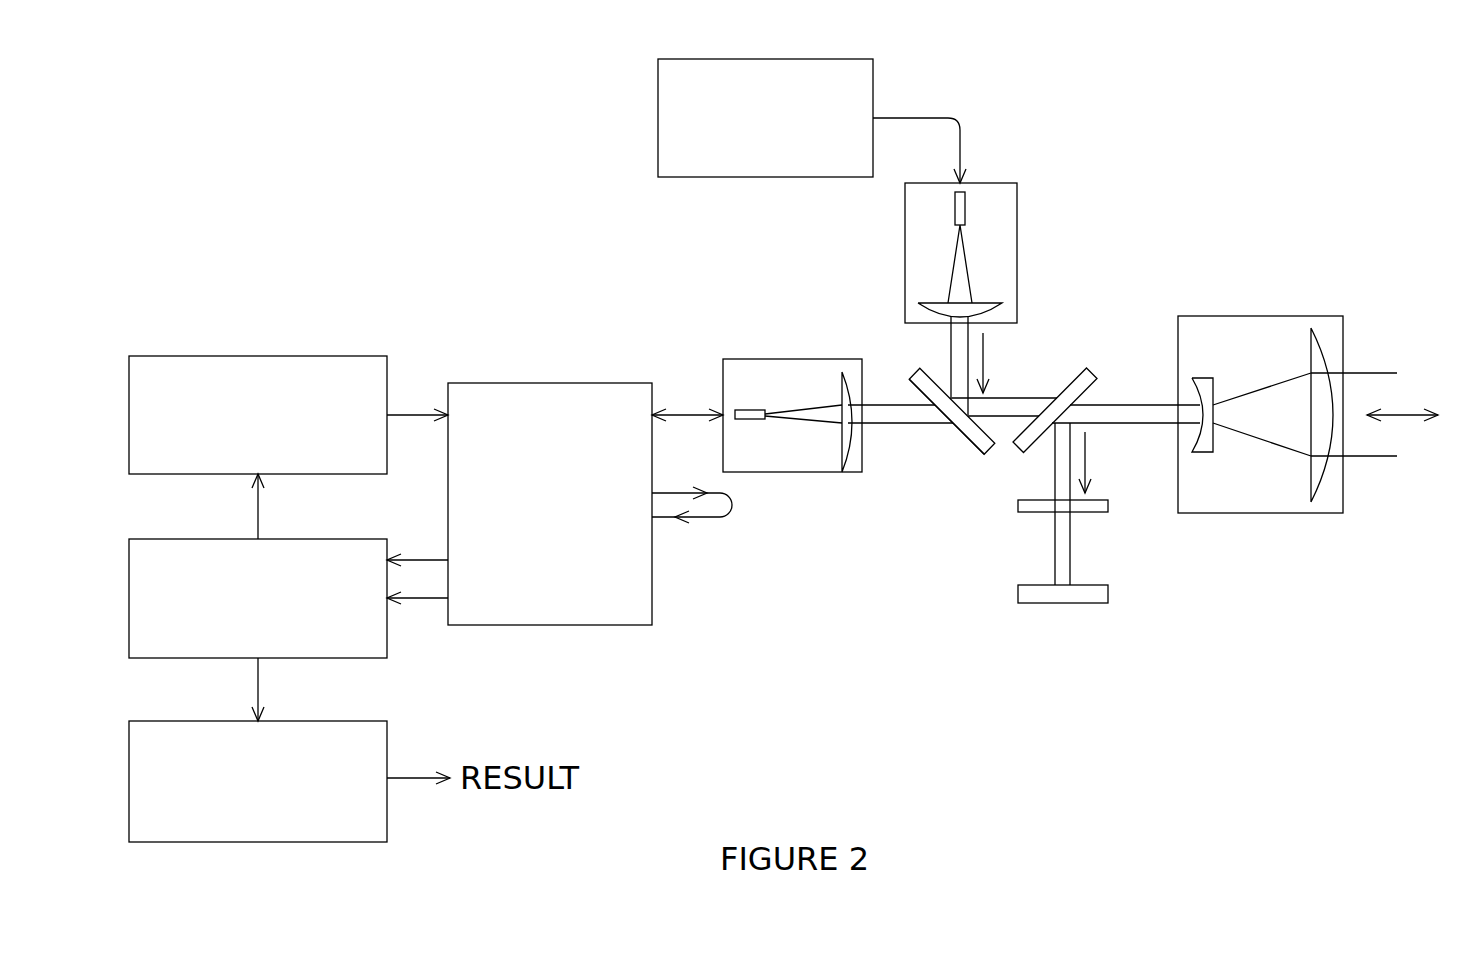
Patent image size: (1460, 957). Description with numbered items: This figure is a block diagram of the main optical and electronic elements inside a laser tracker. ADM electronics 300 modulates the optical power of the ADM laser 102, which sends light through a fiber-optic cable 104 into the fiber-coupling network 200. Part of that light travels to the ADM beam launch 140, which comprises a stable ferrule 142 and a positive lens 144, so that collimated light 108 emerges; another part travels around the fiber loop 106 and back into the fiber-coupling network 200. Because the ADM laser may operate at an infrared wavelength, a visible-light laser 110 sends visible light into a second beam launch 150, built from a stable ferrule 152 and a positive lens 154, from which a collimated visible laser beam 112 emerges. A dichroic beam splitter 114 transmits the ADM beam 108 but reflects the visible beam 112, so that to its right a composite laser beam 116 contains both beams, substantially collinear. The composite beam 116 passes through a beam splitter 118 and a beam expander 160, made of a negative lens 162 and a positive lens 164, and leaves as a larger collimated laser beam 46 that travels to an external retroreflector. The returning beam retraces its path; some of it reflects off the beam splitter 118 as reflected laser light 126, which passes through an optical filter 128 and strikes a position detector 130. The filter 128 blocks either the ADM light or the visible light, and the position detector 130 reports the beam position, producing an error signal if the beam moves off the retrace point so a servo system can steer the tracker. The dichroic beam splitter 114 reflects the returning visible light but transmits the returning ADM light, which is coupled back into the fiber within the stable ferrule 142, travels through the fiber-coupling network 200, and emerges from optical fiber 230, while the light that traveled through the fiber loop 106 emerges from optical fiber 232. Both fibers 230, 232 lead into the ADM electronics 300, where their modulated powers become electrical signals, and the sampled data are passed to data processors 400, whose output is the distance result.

The ADM laser 102 is at (258, 356).
The fiber-optic cable 104 is at (408, 415).
The fiber-coupling network 200 is at (548, 383).
The ADM electronics 300 is at (232, 539).
The optical fiber 230 is at (430, 560).
The optical fiber 232 is at (427, 598).
The data processors 400 is at (233, 721).
The fiber loop 106 is at (730, 517).
The visible-light laser 110 is at (697, 177).
The beam launch 150 is at (986, 244).
The stable ferrule 152 is at (955, 211).
The positive lens 154 is at (917, 303).
The visible laser beam 112 is at (952, 363).
The composite laser beam 116 is at (1008, 398).
The ADM beam launch 140 is at (820, 408).
The stable ferrule 142 is at (753, 419).
The positive lens 144 is at (840, 472).
The collimated light 108 is at (938, 427).
The dichroic beam splitter 114 is at (967, 447).
The beam splitter 118 is at (1095, 370).
The reflected laser light 126 is at (1052, 468).
The optical filter 128 is at (1018, 510).
The position detector 130 is at (1020, 590).
The beam expander 160 is at (1264, 403).
The negative lens 162 is at (1203, 452).
The positive lens 164 is at (1311, 502).
The laser beam 46 is at (1368, 373).